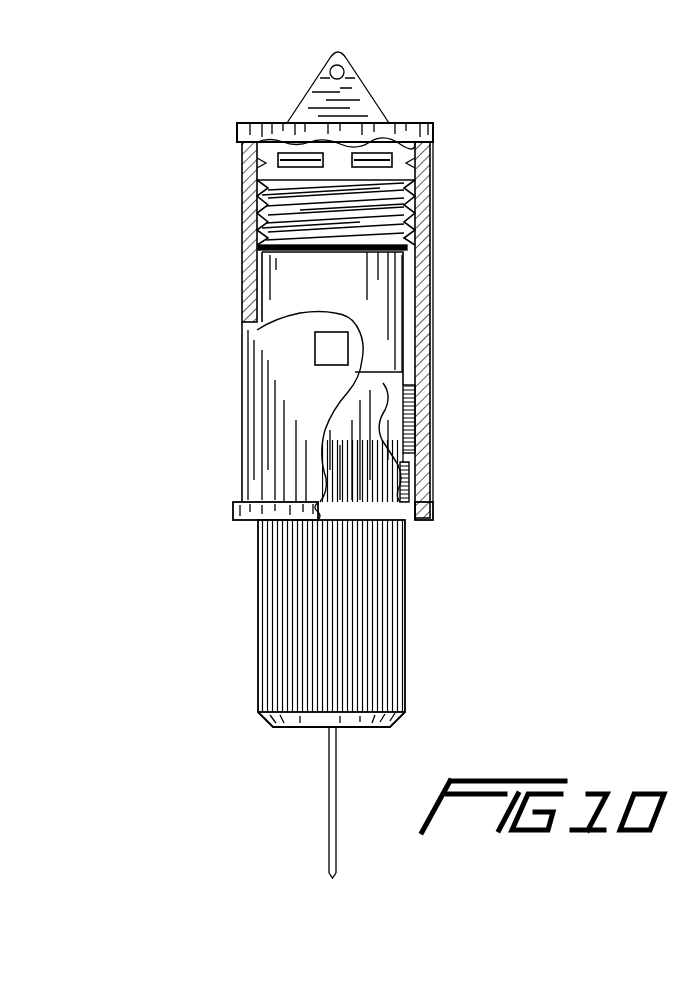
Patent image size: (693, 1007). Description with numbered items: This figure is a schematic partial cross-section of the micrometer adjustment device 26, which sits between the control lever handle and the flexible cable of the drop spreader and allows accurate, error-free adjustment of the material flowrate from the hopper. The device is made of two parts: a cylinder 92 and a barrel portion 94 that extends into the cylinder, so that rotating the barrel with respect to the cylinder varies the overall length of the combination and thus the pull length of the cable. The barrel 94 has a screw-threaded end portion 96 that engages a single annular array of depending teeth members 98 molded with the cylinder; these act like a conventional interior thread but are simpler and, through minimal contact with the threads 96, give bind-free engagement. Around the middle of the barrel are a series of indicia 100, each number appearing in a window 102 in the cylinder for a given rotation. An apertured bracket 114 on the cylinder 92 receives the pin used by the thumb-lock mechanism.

The micrometer adjustment device 26 is at (195, 337).
The cylinder 92 is at (428, 473).
The barrel portion 94 is at (402, 395).
The screw-threaded end portion 96 is at (413, 237).
The depending teeth members 98 is at (290, 152).
The indicia 100 is at (280, 303).
The window 102 is at (316, 352).
The apertured bracket 114 is at (363, 97).